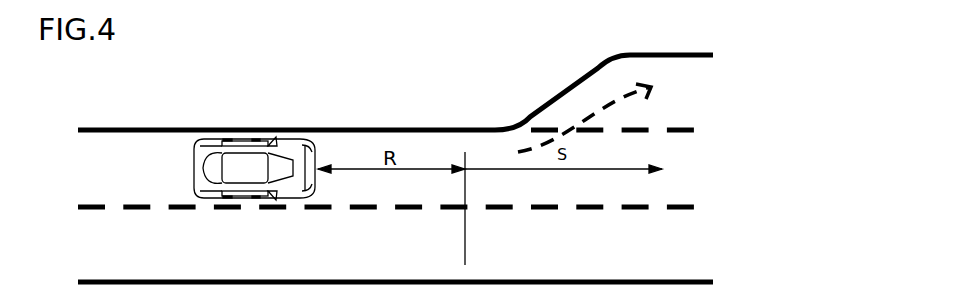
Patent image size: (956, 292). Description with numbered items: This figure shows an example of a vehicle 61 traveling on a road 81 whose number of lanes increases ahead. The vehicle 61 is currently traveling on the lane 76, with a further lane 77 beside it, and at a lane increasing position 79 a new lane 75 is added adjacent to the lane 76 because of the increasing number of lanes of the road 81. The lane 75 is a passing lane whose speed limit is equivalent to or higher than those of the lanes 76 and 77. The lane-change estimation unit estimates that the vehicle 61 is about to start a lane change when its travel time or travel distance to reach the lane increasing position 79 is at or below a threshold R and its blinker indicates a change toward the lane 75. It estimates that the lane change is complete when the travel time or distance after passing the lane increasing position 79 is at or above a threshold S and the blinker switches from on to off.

The vehicle 61 is at (242, 140).
The lane 75 is at (722, 57).
The lane 76 is at (722, 133).
The lane 77 is at (722, 210).
The lane increasing position 79 is at (465, 225).
The road 81 is at (767, 75).